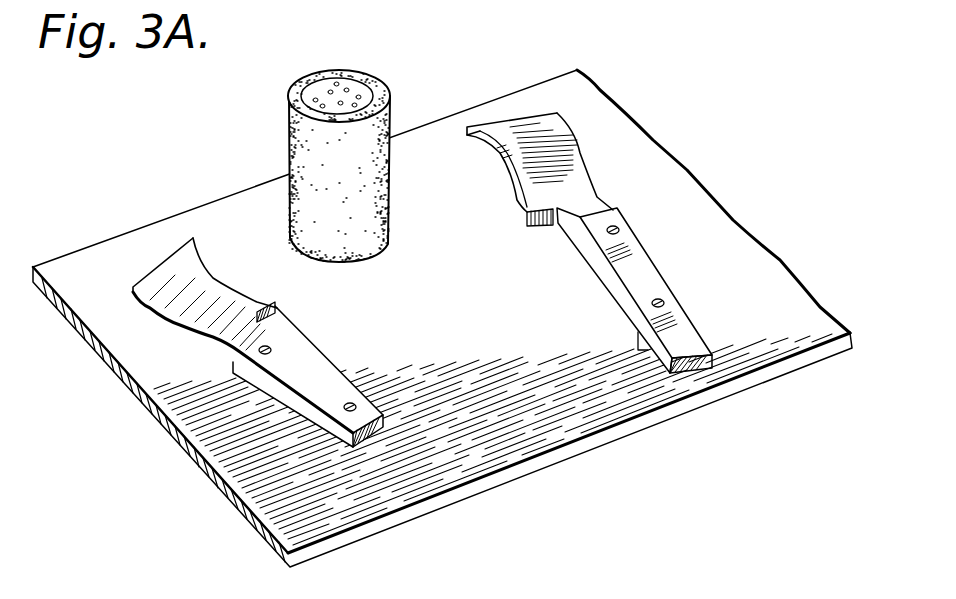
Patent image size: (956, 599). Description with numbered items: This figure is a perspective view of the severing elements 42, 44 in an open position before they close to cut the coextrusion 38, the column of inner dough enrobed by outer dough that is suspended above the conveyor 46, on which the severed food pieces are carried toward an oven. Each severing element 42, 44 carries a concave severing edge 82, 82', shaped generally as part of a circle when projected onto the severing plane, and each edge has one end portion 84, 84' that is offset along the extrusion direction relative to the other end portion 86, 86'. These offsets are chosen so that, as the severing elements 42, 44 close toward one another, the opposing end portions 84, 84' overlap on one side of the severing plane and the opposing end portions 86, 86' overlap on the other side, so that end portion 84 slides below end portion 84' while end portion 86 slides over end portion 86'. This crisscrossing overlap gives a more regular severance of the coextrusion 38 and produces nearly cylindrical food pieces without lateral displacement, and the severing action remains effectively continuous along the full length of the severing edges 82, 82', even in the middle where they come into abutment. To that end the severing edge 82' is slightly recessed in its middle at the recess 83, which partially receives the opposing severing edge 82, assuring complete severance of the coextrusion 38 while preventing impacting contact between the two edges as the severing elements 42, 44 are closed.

The coextrusion 38 is at (293, 143).
The severing element 42 is at (251, 309).
The severing element 44 is at (591, 199).
The conveyor 46 is at (570, 455).
The severing edge 82 is at (236, 264).
The severing edge 82' is at (487, 202).
The recess 83 is at (513, 147).
The end portion 84 is at (192, 261).
The end portion 84' is at (515, 80).
The end portion 86 is at (301, 305).
The end portion 86' is at (544, 243).